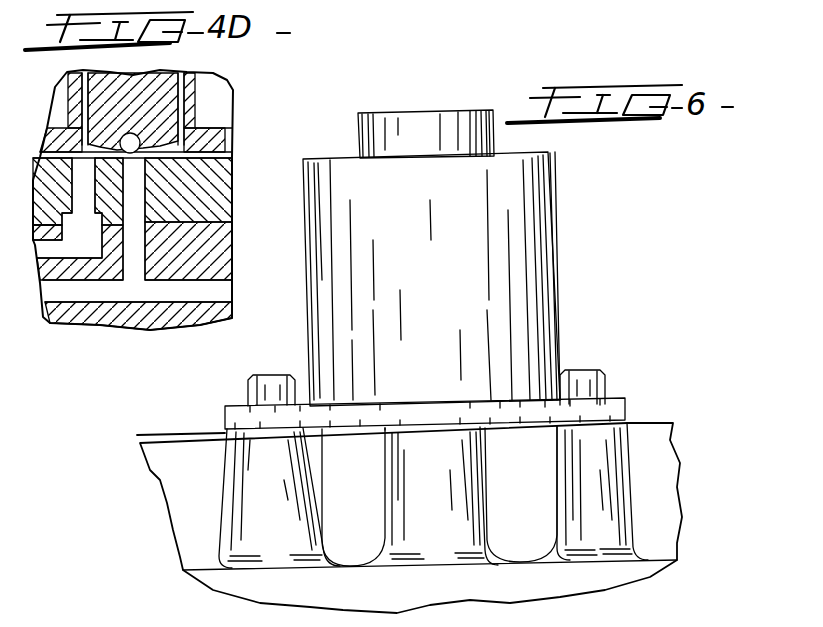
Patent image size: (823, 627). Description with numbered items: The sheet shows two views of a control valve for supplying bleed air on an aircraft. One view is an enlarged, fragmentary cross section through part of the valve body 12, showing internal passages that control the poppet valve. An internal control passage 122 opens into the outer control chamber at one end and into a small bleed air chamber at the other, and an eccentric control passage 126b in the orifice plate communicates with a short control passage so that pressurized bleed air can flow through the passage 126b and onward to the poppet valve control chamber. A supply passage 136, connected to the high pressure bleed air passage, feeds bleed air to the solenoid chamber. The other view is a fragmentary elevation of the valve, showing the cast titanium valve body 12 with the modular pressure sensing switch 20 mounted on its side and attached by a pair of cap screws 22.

In FIG. 4D, the eccentric control passage 126b is at (80, 192).
In FIG. 4D, the internal control passage 122 is at (35, 247).
In FIG. 4D, the supply passage 136 is at (213, 293).
In FIG. 6, the pressure sensing switch 20 is at (441, 289).
In FIG. 6, the cap screws 22 is at (271, 383).
In FIG. 6, the valve body 12 is at (645, 420).